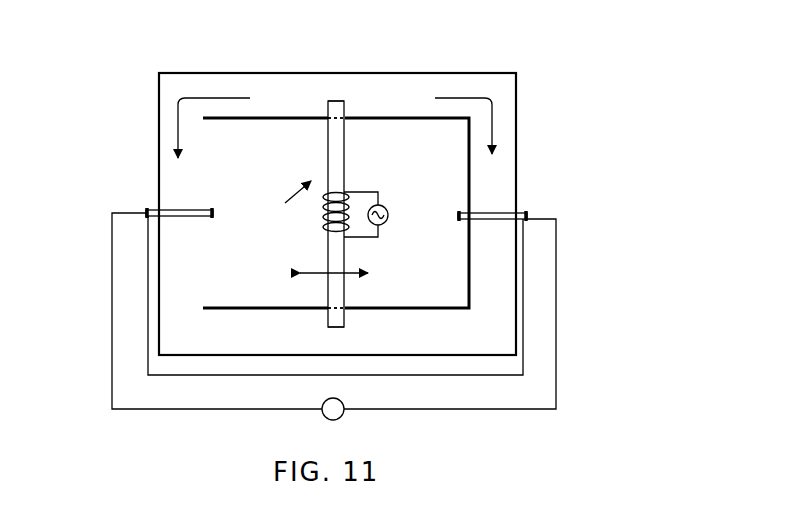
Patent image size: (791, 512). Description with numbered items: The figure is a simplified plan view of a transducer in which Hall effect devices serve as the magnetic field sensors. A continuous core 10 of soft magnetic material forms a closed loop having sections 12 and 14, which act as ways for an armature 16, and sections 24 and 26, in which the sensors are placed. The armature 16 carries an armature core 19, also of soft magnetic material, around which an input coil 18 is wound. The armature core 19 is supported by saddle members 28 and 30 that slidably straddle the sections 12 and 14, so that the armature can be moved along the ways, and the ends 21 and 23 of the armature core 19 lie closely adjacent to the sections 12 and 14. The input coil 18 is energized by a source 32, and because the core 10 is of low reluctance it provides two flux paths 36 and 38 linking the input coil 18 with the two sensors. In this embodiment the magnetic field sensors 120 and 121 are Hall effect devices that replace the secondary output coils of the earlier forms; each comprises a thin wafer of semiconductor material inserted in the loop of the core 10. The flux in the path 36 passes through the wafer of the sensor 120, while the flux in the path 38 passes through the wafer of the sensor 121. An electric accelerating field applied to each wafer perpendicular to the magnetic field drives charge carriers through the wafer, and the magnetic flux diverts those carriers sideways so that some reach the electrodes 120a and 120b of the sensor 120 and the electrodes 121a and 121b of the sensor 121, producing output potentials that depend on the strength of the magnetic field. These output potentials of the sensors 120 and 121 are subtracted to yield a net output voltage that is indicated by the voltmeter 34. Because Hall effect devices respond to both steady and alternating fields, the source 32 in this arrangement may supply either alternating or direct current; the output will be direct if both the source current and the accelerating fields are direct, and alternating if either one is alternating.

The continuous core 10 is at (461, 65).
The core section 12 is at (379, 86).
The core section 14 is at (412, 330).
The armature 16 is at (291, 206).
The input coil 18 is at (357, 192).
The armature core 19 is at (330, 148).
The end of armature core 21 is at (341, 122).
The end of armature core 23 is at (334, 306).
The core section 24 is at (180, 276).
The core section 26 is at (496, 287).
The saddle member 28 is at (336, 100).
The saddle member 30 is at (331, 327).
The current source 32 is at (389, 208).
The voltmeter 34 is at (343, 416).
The flux path 36 is at (178, 128).
The flux path 38 is at (493, 127).
The magnetic field sensor 120 is at (171, 207).
The electrode 120a is at (145, 210).
The electrode 120b is at (214, 212).
The magnetic field sensor 121 is at (503, 213).
The electrode 121a is at (458, 217).
The electrode 121b is at (530, 216).